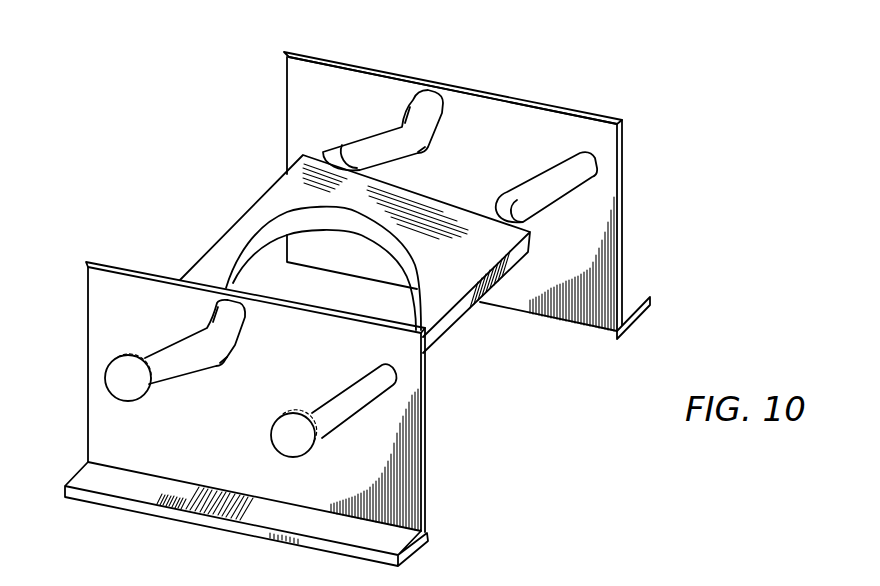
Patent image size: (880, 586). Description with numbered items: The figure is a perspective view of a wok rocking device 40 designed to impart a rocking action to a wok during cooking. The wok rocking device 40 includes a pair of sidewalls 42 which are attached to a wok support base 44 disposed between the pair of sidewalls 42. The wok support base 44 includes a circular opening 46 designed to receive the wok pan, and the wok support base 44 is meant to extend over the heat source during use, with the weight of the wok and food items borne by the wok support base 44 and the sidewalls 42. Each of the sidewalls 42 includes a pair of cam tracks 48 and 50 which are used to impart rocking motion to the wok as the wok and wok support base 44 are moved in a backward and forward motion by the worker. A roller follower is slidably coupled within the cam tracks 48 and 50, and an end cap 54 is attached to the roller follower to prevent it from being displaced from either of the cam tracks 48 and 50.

The wok rocking device 40 is at (394, 309).
The sidewalls 42 is at (302, 100).
The wok support base 44 is at (457, 289).
The circular opening 46 is at (253, 243).
The cam track 48 is at (247, 263).
The cam track 50 is at (517, 190).
The end cap 54 is at (122, 391).